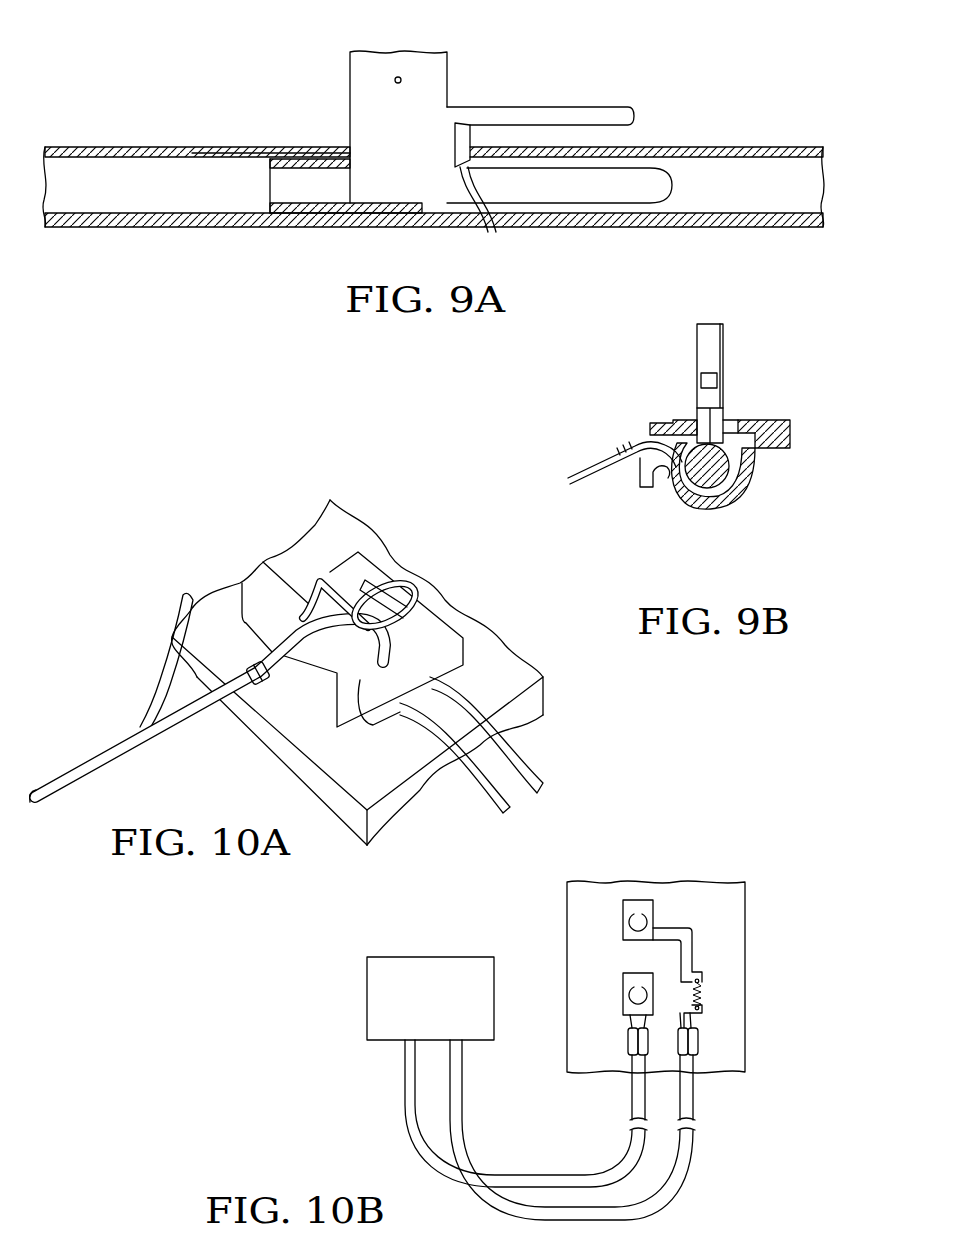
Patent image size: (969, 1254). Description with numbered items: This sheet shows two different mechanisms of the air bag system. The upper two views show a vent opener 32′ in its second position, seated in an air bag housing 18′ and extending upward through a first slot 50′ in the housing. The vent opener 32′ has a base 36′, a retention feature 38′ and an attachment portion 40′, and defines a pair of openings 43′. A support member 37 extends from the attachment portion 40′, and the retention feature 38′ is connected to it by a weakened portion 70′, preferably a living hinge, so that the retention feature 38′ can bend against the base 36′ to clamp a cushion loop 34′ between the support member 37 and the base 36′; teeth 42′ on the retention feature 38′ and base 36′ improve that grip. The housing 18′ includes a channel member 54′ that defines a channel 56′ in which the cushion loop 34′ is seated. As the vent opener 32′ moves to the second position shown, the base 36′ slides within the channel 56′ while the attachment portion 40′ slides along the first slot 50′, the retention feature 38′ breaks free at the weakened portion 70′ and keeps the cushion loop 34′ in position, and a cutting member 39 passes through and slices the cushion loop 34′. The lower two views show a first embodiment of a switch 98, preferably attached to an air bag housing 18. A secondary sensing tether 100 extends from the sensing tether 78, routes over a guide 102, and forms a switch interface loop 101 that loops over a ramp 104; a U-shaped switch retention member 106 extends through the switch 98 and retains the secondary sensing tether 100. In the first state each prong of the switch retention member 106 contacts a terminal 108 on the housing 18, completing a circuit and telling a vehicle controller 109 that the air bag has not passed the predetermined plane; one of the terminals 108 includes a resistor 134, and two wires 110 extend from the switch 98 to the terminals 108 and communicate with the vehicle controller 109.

In FIG. 9A, the air bag housing 18′ is at (112, 147).
In FIG. 9B, the air bag housing 18′ is at (657, 421).
In FIG. 9A, the first slot 50′ is at (192, 153).
In FIG. 9A, the channel 56′ is at (85, 213).
In FIG. 9A, the cushion loop 34′ is at (267, 165).
In FIG. 9B, the cushion loop 34′ is at (637, 460).
In FIG. 9A, the vent opener 32′ is at (348, 100).
In FIG. 9B, the vent opener 32′ is at (712, 323).
In FIG. 9A, the attachment portion 40′ is at (402, 52).
In FIG. 9A, the openings 43′ is at (405, 80).
In FIG. 9A, the support member 37 is at (590, 107).
In FIG. 9A, the weakened portion 70′ is at (634, 116).
In FIG. 9A, the retention feature 38′ is at (470, 140).
In FIG. 9A, the base 36′ is at (552, 205).
In FIG. 9B, the base 36′ is at (725, 488).
In FIG. 9A, the teeth 42′ is at (486, 217).
In FIG. 9B, the cutting member 39 is at (718, 425).
In FIG. 9B, the channel member 54′ is at (710, 512).
In FIG. 10A, the secondary sensing tether 100 is at (185, 730).
In FIG. 10A, the guide 102 is at (297, 587).
In FIG. 10A, the switch retention member 106 is at (322, 583).
In FIG. 10A, the ramp 104 is at (385, 590).
In FIG. 10A, the switch interface loop 101 is at (407, 595).
In FIG. 10A, the switch 98 is at (504, 602).
In FIG. 10A, the sensing tether 78 is at (85, 755).
In FIG. 10A, the wires 110 is at (490, 797).
In FIG. 10B, the wires 110 is at (450, 1100).
In FIG. 10B, the air bag housing 18 is at (745, 945).
In FIG. 10B, the terminals 108 is at (637, 972).
In FIG. 10B, the resistor 134 is at (701, 995).
In FIG. 10B, the vehicle controller 109 is at (437, 957).